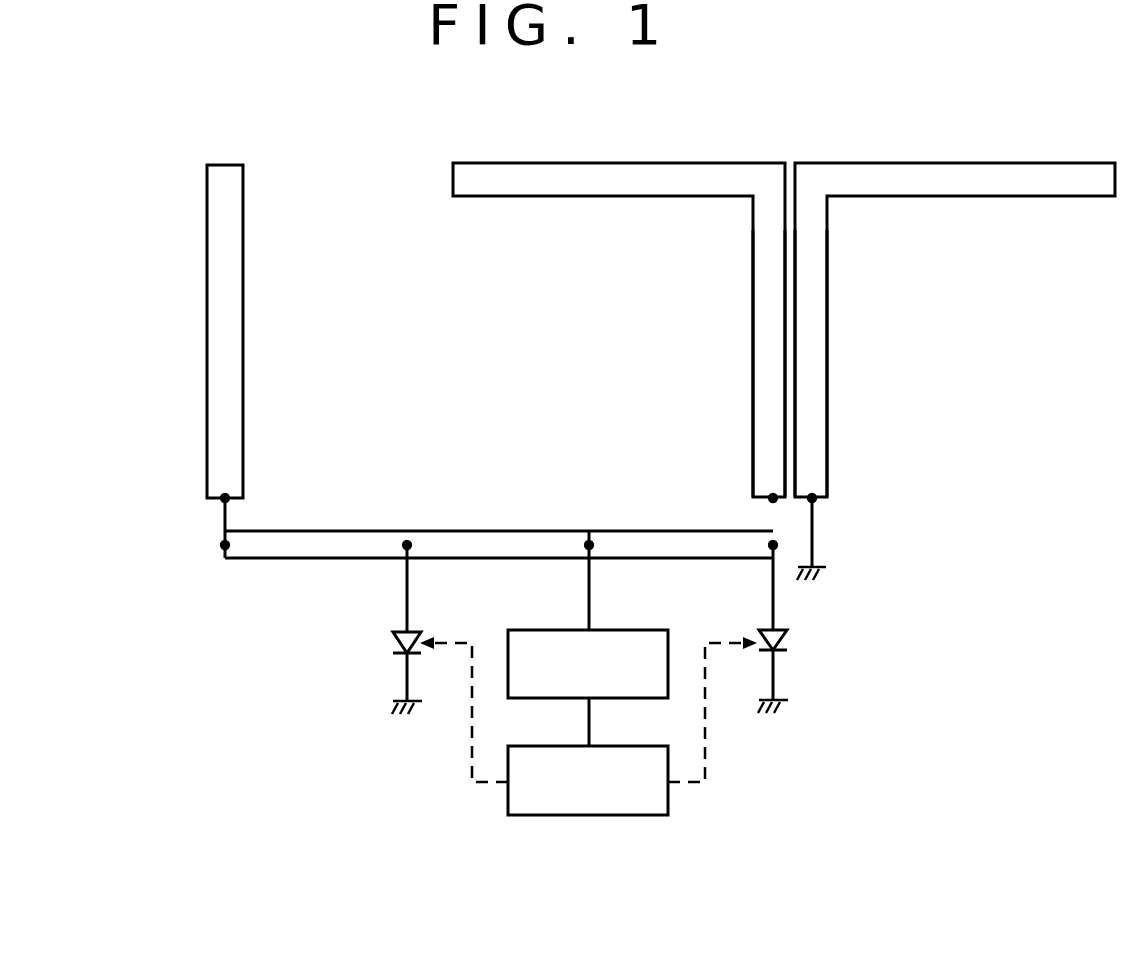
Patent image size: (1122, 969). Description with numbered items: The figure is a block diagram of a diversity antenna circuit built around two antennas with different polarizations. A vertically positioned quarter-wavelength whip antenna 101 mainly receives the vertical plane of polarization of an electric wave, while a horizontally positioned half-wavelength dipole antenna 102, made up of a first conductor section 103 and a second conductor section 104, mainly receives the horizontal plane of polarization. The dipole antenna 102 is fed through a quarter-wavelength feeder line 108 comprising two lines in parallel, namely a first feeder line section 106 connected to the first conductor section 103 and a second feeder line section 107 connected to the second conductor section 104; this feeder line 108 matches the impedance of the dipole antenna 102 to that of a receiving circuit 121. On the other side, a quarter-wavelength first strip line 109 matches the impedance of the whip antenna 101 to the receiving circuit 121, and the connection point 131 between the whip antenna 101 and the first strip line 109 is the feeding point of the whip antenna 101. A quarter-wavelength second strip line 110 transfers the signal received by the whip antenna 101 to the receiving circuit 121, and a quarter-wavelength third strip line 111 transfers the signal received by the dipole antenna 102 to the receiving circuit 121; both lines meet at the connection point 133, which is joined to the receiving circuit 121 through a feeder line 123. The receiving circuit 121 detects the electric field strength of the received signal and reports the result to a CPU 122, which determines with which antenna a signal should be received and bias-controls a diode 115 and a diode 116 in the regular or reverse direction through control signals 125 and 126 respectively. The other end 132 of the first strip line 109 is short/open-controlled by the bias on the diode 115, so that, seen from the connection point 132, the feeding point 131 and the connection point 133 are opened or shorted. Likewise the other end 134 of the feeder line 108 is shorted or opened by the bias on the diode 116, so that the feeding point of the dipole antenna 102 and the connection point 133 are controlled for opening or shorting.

The vertically positioned 1/4 wavelength whip antenna 101 is at (228, 352).
The horizontally positioned half-wavelength dipole antenna 102 is at (831, 118).
The first conductor section 103 is at (692, 186).
The second conductor section 104 is at (870, 170).
The first feeder line section 106 is at (768, 326).
The second feeder line section 107 is at (812, 348).
The 1/4 wavelength feeder line 108 is at (913, 268).
The 1/4 wavelength first strip line 109 is at (306, 537).
The 1/4 wavelength second strip line 110 is at (476, 538).
The 1/4 wavelength third strip line 111 is at (645, 538).
The diode 115 is at (392, 645).
The diode 116 is at (783, 636).
The receiving circuit 121 is at (620, 632).
The CPU 122 is at (598, 816).
The feeder line 123 is at (588, 598).
The control signal 125 is at (470, 740).
The control signal 126 is at (710, 728).
The connection point 131 is at (222, 548).
The connection point 132 is at (404, 548).
The connection point 133 is at (592, 548).
The connection point 134 is at (768, 548).